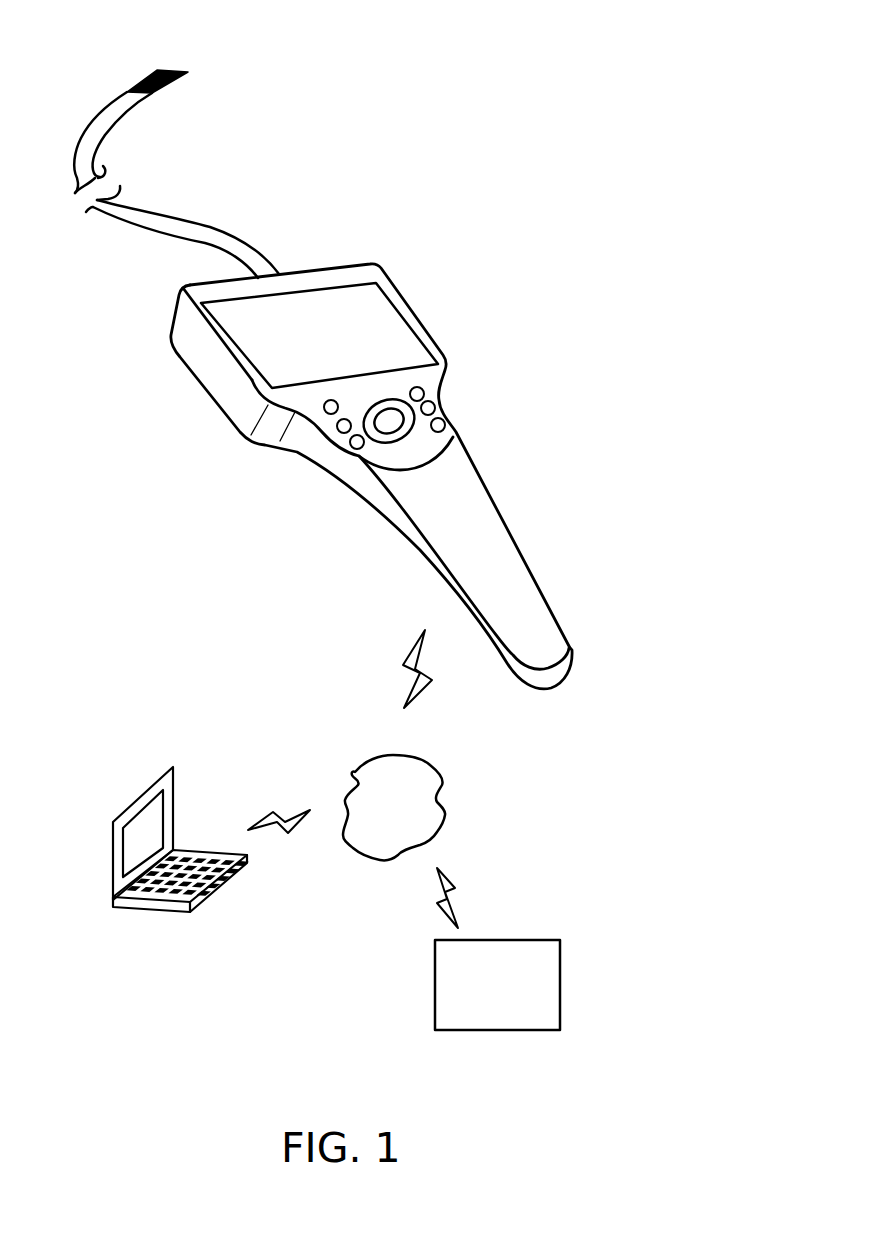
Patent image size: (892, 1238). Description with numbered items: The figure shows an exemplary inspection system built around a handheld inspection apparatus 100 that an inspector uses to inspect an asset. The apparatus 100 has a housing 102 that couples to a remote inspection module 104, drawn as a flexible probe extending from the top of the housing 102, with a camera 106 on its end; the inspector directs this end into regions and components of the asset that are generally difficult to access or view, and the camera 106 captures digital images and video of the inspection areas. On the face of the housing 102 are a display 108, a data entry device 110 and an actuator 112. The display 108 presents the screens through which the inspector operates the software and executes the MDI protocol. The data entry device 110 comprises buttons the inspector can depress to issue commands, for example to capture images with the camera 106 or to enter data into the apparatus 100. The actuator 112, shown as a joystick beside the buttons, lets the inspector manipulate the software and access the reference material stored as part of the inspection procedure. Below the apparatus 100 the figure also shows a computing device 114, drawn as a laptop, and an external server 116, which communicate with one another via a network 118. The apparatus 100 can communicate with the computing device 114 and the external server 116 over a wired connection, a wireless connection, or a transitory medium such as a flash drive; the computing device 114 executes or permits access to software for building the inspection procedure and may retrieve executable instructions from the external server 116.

The inspection apparatus 100 is at (587, 183).
The housing 102 is at (435, 375).
The remote inspection module 104 is at (160, 181).
The camera 106 is at (173, 84).
The display 108 is at (377, 330).
The data entry device 110 is at (354, 452).
The actuator 112 is at (392, 423).
The computing device 114 is at (170, 937).
The external server 116 is at (522, 999).
The network 118 is at (420, 822).